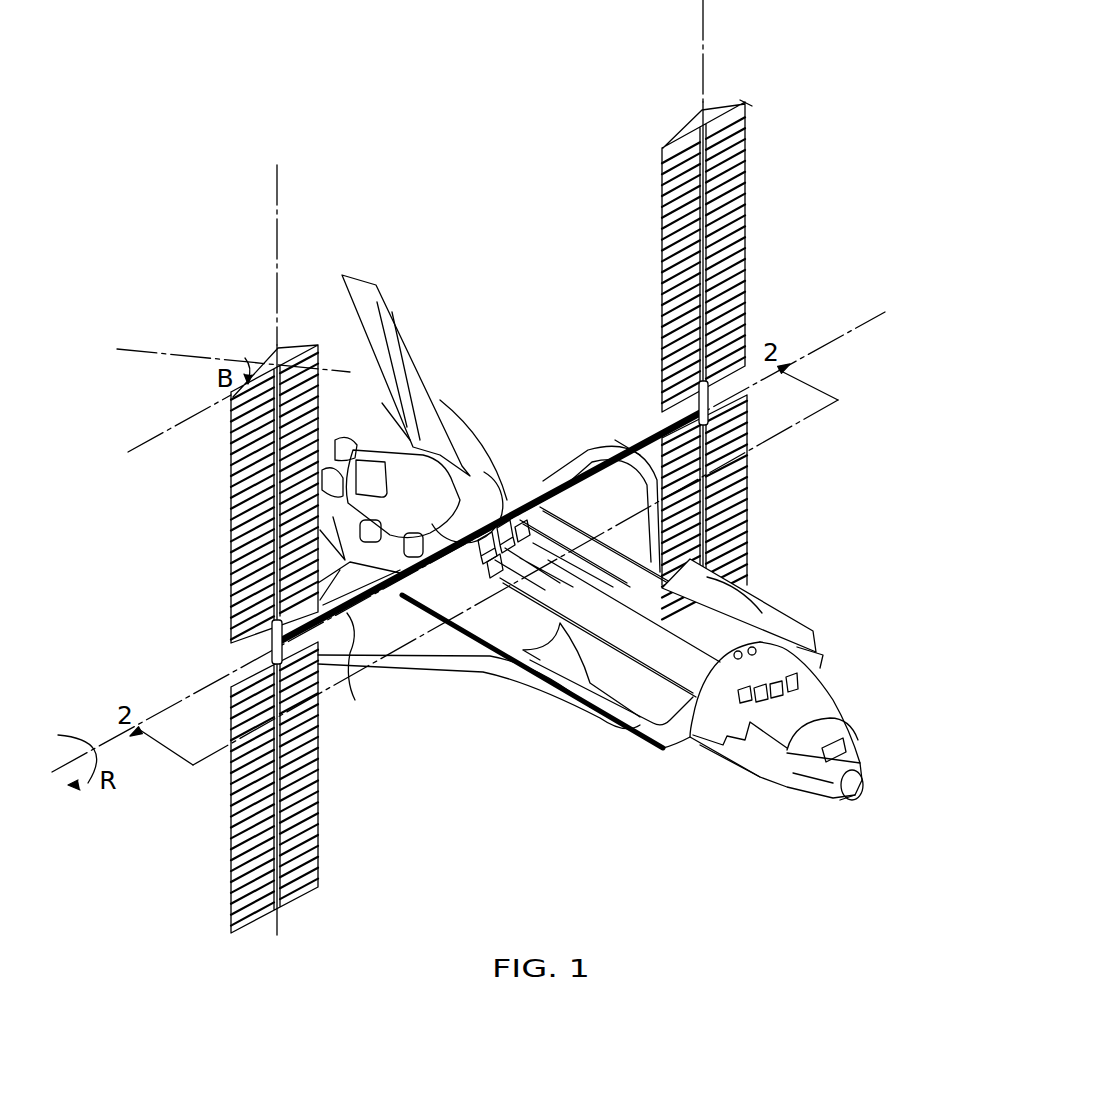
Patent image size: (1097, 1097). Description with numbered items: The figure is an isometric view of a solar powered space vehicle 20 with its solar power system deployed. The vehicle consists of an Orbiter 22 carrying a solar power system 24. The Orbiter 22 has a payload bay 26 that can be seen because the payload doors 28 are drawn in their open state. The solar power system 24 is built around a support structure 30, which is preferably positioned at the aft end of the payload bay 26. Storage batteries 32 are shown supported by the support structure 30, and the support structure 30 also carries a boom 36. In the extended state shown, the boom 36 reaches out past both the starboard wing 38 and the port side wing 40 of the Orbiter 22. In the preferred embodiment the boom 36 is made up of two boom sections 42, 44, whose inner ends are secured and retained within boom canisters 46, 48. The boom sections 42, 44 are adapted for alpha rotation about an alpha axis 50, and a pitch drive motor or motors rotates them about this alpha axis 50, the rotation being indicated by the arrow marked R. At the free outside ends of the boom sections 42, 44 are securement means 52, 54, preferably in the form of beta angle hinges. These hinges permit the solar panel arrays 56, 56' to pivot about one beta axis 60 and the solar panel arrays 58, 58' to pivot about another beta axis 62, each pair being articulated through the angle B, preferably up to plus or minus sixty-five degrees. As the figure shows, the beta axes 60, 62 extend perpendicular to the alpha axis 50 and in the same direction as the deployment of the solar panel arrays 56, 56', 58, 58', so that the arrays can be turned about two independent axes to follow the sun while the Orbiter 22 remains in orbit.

The solar powered space vehicle 20 is at (472, 190).
The Orbiter 22 is at (756, 758).
The solar power system 24 is at (742, 98).
The payload bay 26 is at (626, 653).
The payload doors 28 is at (780, 628).
The support structure 30 is at (470, 640).
The storage batteries 32 is at (477, 577).
The boom 36 is at (615, 440).
The starboard wing 38 is at (485, 668).
The port side wing 40 is at (582, 510).
The boom section 42 is at (355, 700).
The boom section 44 is at (640, 455).
The boom canister 46 is at (500, 530).
The boom canister 48 is at (505, 520).
The alpha axis 50 is at (878, 314).
The securement means 52 is at (262, 638).
The securement means 54 is at (712, 398).
The solar panel array 56 is at (251, 494).
The solar panel array 56' is at (253, 787).
The solar panel array 58 is at (744, 257).
The solar panel array 58' is at (748, 507).
The beta axis 60 is at (278, 290).
The beta axis 62 is at (705, 73).